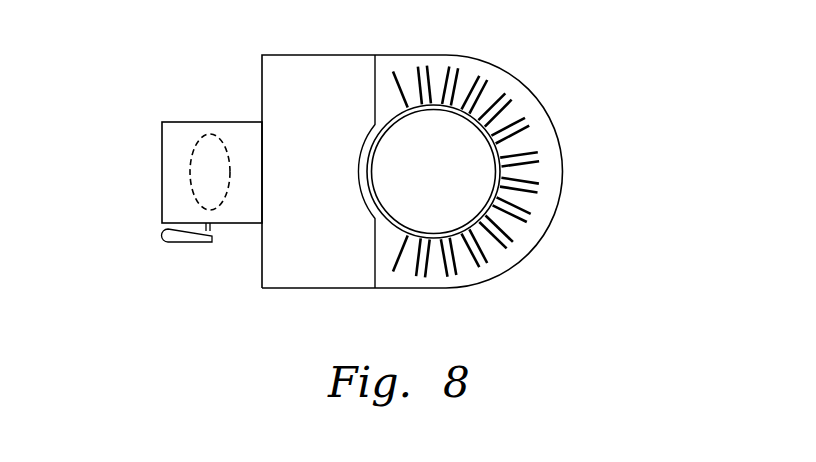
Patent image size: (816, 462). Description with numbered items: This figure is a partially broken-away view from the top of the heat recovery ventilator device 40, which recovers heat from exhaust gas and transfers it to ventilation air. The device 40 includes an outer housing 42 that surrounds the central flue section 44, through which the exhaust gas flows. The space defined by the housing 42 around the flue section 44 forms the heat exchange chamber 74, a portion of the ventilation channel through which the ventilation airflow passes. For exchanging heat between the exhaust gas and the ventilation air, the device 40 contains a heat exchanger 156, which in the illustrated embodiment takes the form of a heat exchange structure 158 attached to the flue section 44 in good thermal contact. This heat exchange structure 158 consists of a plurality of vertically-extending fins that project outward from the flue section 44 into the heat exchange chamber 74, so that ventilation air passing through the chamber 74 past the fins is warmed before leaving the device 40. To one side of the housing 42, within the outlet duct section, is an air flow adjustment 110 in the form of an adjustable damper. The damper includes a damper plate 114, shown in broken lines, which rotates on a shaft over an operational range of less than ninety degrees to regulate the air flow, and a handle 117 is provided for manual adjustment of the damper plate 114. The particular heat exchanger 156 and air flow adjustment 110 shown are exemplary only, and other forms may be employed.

The heat recovery ventilator device 40 is at (536, 285).
The outer housing 42 is at (487, 288).
The flue section 44 is at (400, 218).
The heat exchange chamber 74 is at (537, 210).
The air flow adjustment 110 is at (218, 90).
The damper plate 114 is at (210, 175).
The handle 117 is at (178, 243).
The heat exchanger 156 is at (527, 104).
The heat exchange structure 158 is at (517, 133).